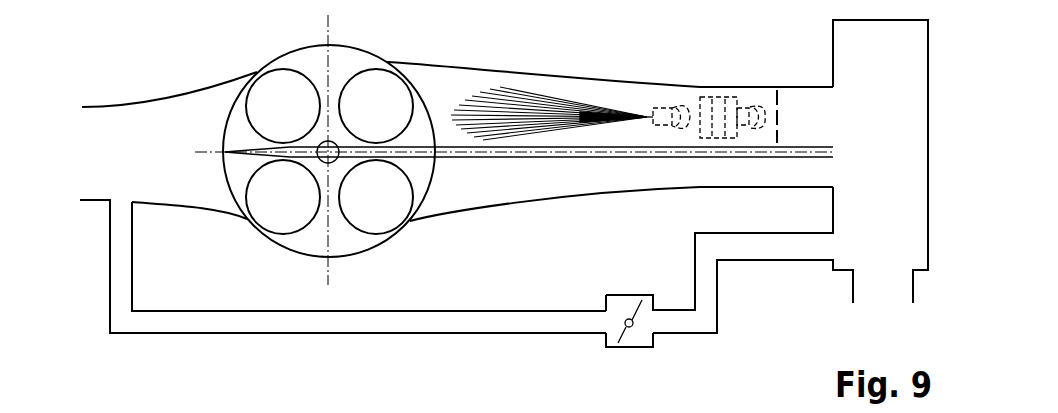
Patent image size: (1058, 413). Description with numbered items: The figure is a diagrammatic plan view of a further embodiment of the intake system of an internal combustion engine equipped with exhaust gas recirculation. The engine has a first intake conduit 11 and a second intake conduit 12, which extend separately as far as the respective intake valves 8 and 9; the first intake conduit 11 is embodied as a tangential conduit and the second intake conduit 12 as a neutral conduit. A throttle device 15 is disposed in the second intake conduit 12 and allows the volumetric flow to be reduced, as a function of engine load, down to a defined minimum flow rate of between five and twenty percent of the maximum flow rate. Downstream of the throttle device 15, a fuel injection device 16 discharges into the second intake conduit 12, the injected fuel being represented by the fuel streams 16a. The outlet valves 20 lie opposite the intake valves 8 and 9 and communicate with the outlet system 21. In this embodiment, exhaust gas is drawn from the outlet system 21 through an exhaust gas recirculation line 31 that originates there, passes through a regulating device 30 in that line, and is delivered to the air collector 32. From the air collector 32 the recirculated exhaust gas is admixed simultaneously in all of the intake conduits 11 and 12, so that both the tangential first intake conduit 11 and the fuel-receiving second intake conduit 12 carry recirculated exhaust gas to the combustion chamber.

The intake valve 8 is at (380, 200).
The intake valve 9 is at (367, 93).
The first intake conduit 11 is at (471, 196).
The second intake conduit 12 is at (456, 104).
The throttle device 15 is at (783, 118).
The fuel injection device 16 is at (725, 105).
The fuel streams 16a is at (530, 102).
The outlet valves 20 is at (282, 95).
The outlet system 21 is at (153, 103).
The regulating device 30 is at (633, 326).
The exhaust gas recirculation line 31 is at (452, 318).
The air collector 32 is at (898, 140).